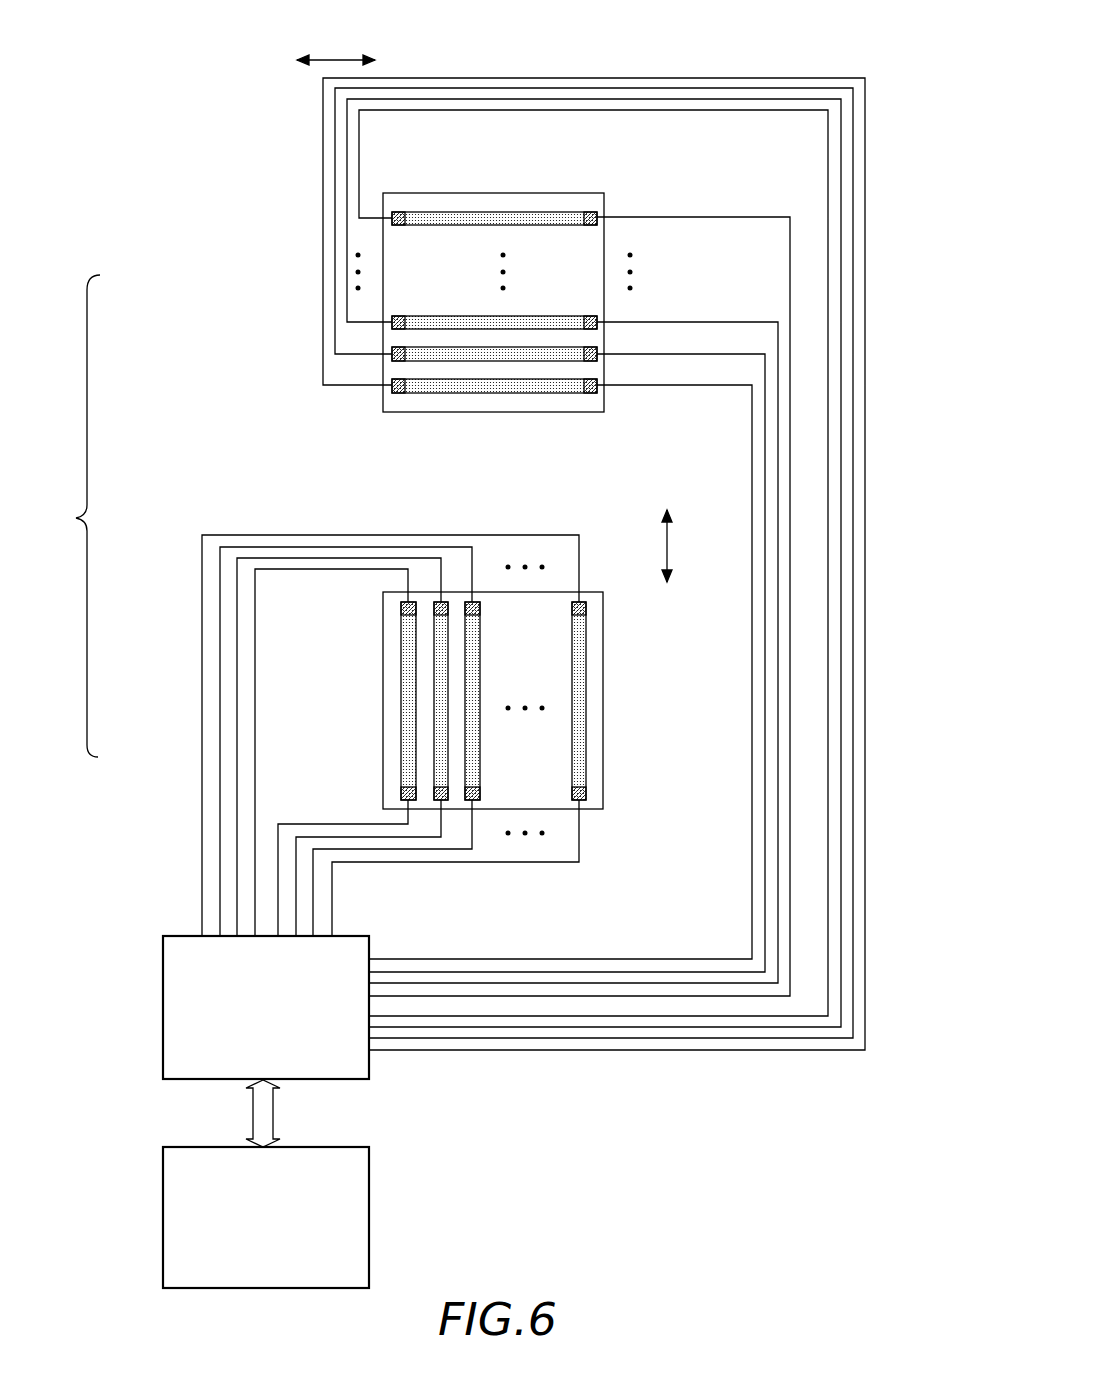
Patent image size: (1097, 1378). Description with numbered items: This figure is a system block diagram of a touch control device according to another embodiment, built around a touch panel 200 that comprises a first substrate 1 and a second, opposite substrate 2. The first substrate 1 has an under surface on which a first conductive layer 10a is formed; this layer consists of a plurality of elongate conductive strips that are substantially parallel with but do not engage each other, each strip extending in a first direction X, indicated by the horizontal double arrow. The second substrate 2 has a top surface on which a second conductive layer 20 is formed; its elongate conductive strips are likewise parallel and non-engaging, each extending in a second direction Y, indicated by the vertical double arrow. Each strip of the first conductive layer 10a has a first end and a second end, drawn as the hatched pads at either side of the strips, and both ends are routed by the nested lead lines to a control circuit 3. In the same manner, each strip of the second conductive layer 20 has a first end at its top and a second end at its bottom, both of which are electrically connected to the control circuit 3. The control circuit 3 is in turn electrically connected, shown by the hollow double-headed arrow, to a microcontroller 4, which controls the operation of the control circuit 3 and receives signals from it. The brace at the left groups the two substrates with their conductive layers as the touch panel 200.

The first substrate 1 is at (428, 200).
The first conductive layer 10a is at (494, 289).
The second substrate 2 is at (600, 633).
The second conductive layer 20 is at (502, 700).
The control circuit 3 is at (178, 950).
The microcontroller 4 is at (180, 1163).
The touch panel 200 is at (60, 516).
The first direction X is at (337, 58).
The second direction Y is at (670, 545).